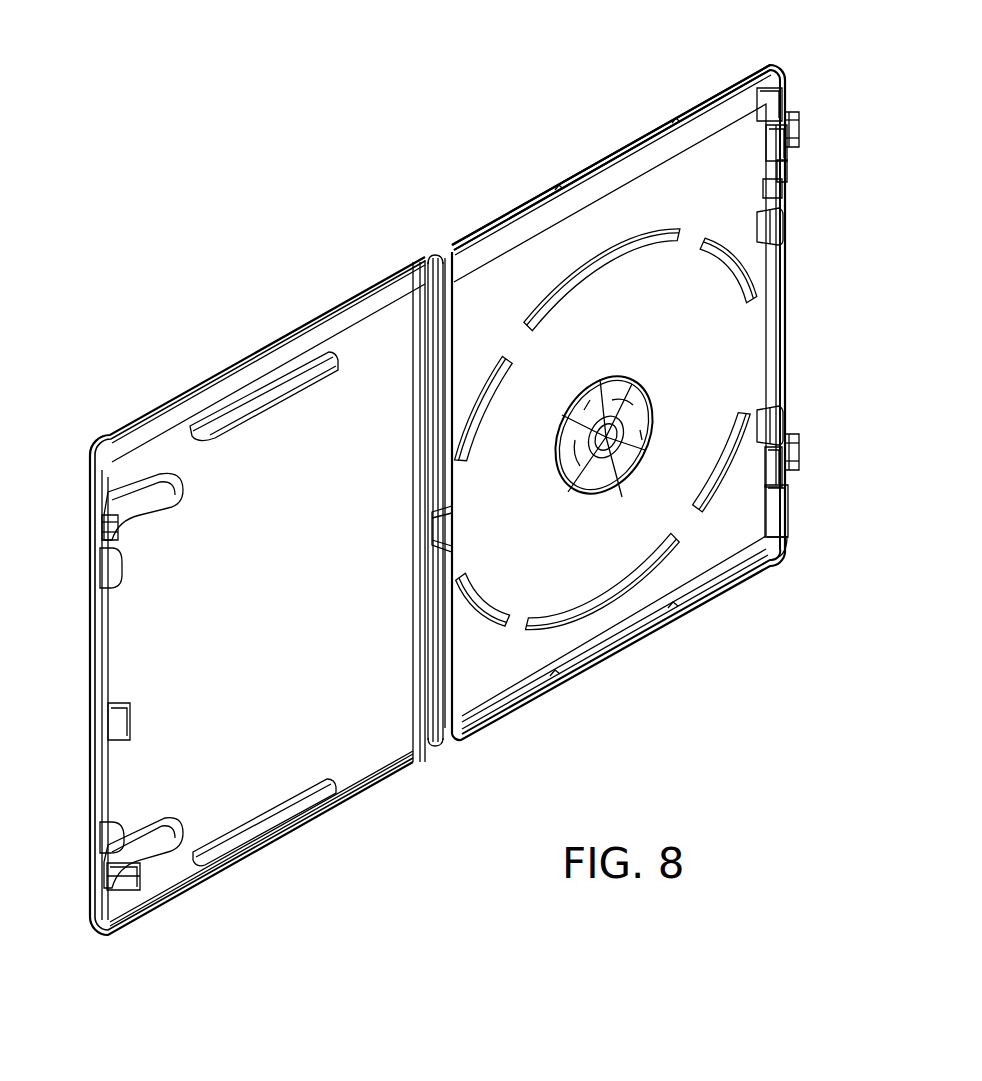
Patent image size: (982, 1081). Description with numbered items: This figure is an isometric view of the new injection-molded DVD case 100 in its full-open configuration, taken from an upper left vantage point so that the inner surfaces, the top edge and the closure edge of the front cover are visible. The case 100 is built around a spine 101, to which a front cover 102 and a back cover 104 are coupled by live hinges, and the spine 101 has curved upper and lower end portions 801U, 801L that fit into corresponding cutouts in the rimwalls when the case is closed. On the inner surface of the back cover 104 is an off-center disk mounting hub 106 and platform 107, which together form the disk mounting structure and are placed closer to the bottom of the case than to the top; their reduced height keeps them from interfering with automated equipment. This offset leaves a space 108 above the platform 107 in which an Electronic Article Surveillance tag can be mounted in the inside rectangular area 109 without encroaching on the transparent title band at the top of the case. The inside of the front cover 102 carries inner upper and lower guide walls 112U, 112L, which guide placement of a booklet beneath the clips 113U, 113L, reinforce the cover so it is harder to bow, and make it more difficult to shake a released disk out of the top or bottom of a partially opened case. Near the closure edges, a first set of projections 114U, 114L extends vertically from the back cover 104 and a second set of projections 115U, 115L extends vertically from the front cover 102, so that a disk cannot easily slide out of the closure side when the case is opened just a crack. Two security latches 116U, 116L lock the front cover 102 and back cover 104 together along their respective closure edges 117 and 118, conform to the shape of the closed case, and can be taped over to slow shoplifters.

The injection-molded DVD case 100 is at (456, 184).
The spine 101 is at (444, 256).
The front cover 102 is at (178, 452).
The back cover 104 is at (622, 212).
The disk mounting hub 106 is at (648, 381).
The disk mounting platform 107 is at (614, 606).
The space for EAS tag 108 is at (567, 287).
The inside rectangular area 109 is at (658, 186).
The inner upper guide wall 112U is at (270, 392).
The inner lower guide wall 112L is at (276, 820).
The upper clip 113U is at (150, 497).
The lower clip 113L is at (158, 848).
The upper projection of first set 114U is at (768, 233).
The lower projection of first set 114L is at (768, 417).
The upper projection of second set 115U is at (92, 548).
The lower projection of second set 115L is at (100, 850).
The upper security latch 116U is at (800, 122).
The lower security latch 116L is at (788, 466).
The closure edge of front cover 117 is at (88, 632).
The closure edge of back cover 118 is at (782, 303).
The curved upper end portion of spine 801U is at (434, 256).
The curved lower end portion of spine 801L is at (437, 746).